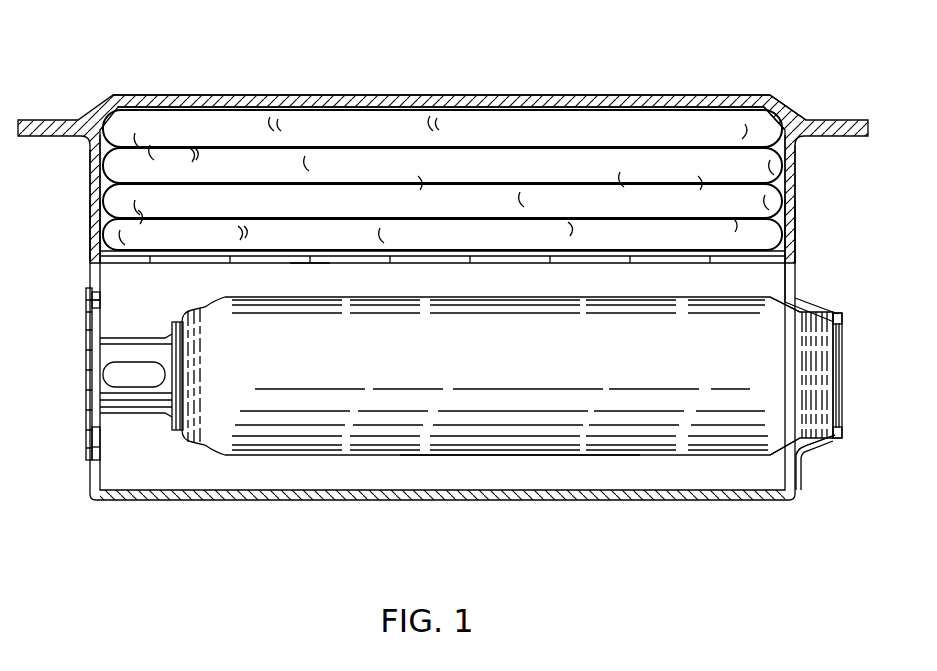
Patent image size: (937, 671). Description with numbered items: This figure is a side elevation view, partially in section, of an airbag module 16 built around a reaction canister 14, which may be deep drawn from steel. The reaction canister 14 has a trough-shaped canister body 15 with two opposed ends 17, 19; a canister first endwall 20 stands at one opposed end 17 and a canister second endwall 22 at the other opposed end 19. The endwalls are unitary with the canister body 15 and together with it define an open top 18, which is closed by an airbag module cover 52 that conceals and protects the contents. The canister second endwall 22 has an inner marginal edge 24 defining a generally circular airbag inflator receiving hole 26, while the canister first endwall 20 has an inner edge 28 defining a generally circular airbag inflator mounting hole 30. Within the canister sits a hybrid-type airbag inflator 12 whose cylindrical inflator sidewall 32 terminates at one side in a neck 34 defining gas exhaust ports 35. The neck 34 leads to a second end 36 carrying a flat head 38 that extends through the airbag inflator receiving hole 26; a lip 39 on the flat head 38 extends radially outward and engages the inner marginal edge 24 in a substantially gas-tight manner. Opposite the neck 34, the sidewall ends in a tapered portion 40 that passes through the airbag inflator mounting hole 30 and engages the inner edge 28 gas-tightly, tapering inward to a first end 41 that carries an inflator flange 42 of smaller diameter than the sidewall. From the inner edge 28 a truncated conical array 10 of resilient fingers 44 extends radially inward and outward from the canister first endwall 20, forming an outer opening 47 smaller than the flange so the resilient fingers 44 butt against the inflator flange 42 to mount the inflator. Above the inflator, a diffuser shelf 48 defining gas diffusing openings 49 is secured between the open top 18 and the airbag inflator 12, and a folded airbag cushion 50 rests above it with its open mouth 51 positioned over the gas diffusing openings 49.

The truncated conical array 10 is at (830, 300).
The airbag inflator 12 is at (414, 462).
The reaction canister 14 is at (806, 201).
The canister body 15 is at (250, 501).
The airbag module 16 is at (376, 80).
The opposed end 17 is at (797, 172).
The open top 18 is at (771, 99).
The opposed end 19 is at (89, 168).
The canister first endwall 20 is at (797, 220).
The canister second endwall 22 is at (90, 212).
The inner marginal edge 24 is at (100, 298).
The airbag inflator receiving hole 26 is at (100, 305).
The inner edge 28 is at (802, 447).
The airbag inflator mounting hole 30 is at (800, 438).
The cylindrical inflator sidewall 32 is at (513, 457).
The neck 34 is at (167, 420).
The gas exhaust ports 35 is at (115, 386).
The second end 36 is at (86, 312).
The flat head 38 is at (102, 430).
The lip 39 is at (90, 462).
The tapered portion 40 is at (784, 299).
The first end 41 is at (842, 352).
The inflator flange 42 is at (839, 313).
The resilient fingers 44 is at (811, 305).
The outer opening 47 is at (839, 428).
The diffuser shelf 48 is at (308, 263).
The gas diffusing openings 49 is at (245, 258).
The folded airbag cushion 50 is at (495, 243).
The open mouth 51 is at (400, 251).
The airbag module cover 52 is at (575, 97).